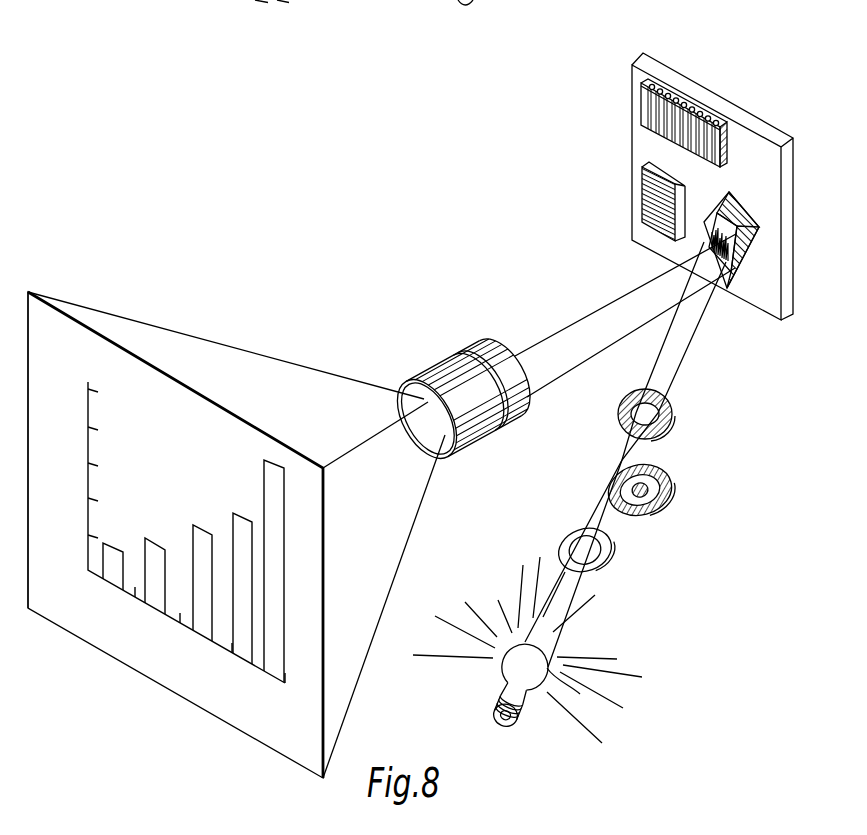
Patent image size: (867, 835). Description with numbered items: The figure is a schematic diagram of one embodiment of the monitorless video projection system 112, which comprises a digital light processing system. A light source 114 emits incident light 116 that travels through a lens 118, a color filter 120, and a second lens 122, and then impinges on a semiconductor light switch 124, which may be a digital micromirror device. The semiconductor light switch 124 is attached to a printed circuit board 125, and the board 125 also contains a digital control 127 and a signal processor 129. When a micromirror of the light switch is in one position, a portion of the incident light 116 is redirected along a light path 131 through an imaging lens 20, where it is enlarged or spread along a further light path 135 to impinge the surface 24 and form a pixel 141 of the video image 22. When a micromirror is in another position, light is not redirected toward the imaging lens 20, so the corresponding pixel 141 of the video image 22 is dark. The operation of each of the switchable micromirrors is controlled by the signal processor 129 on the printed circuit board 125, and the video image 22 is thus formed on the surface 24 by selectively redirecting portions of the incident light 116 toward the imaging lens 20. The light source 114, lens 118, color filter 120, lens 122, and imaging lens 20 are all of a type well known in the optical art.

The imaging lens 20 is at (452, 348).
The video image 22 is at (237, 692).
The surface 24 is at (34, 320).
The monitorless video projection system 112 is at (407, 187).
The light source 114 is at (508, 676).
The incident light 116 is at (565, 605).
The lens 118 is at (598, 556).
The color filter 120 is at (668, 513).
The lens 122 is at (672, 430).
The semiconductor light switch 124 is at (724, 287).
The printed circuit board 125 is at (654, 65).
The digital control 127 is at (650, 110).
The signal processor 129 is at (642, 200).
The light path 131 is at (582, 323).
The light path 135 is at (235, 358).
The pixel 141 is at (200, 672).